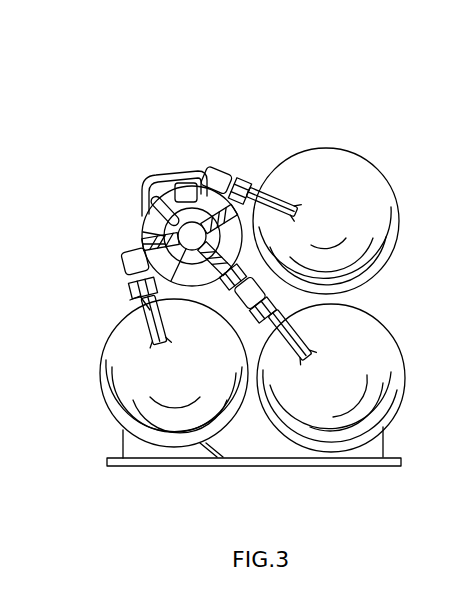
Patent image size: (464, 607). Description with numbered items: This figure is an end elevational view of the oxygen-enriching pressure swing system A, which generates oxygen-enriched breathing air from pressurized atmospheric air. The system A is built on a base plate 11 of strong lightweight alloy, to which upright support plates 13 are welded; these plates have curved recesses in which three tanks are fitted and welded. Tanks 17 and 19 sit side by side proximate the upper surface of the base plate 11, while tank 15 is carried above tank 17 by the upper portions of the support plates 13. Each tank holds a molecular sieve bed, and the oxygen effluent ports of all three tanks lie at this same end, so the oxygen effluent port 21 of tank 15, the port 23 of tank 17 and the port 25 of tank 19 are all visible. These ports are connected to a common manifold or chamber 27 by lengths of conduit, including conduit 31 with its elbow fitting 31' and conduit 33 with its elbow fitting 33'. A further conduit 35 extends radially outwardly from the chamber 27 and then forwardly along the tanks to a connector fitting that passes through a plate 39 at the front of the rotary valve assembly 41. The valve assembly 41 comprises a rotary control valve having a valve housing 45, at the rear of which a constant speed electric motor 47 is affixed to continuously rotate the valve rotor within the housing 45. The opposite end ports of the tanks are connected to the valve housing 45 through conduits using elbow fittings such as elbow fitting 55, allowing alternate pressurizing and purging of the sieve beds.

The base plate 11 is at (254, 479).
The upright support plates 13 is at (267, 450).
The tank 15 is at (359, 157).
The tank 17 is at (385, 327).
The tank 19 is at (101, 386).
The oxygen effluent port 21 is at (280, 140).
The oxygen effluent port 23 is at (290, 353).
The oxygen effluent port 25 is at (109, 298).
The common manifold or chamber 27 is at (146, 228).
The conduit 31 is at (105, 288).
The elbow fitting 31' is at (101, 261).
The conduit 33 is at (259, 149).
The elbow fitting 33' is at (246, 127).
The further conduit 35 is at (169, 178).
The plate 39 is at (143, 240).
The rotary valve assembly 41 is at (146, 166).
The valve housing 45 is at (148, 218).
The constant speed electric motor 47 is at (135, 310).
The elbow fitting 55 is at (193, 179).
The system A is at (85, 482).